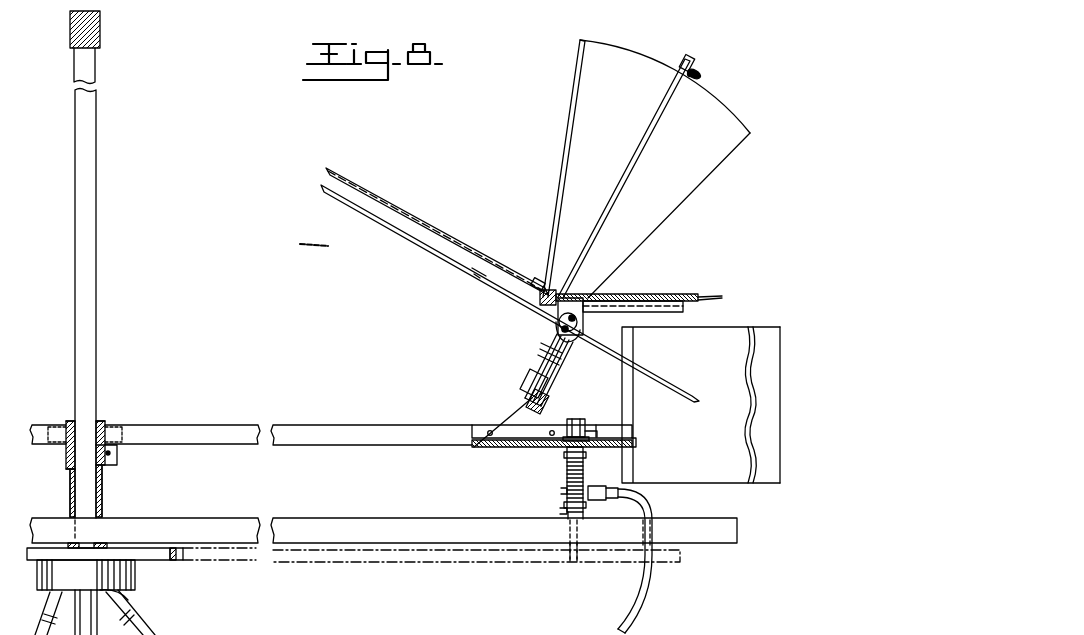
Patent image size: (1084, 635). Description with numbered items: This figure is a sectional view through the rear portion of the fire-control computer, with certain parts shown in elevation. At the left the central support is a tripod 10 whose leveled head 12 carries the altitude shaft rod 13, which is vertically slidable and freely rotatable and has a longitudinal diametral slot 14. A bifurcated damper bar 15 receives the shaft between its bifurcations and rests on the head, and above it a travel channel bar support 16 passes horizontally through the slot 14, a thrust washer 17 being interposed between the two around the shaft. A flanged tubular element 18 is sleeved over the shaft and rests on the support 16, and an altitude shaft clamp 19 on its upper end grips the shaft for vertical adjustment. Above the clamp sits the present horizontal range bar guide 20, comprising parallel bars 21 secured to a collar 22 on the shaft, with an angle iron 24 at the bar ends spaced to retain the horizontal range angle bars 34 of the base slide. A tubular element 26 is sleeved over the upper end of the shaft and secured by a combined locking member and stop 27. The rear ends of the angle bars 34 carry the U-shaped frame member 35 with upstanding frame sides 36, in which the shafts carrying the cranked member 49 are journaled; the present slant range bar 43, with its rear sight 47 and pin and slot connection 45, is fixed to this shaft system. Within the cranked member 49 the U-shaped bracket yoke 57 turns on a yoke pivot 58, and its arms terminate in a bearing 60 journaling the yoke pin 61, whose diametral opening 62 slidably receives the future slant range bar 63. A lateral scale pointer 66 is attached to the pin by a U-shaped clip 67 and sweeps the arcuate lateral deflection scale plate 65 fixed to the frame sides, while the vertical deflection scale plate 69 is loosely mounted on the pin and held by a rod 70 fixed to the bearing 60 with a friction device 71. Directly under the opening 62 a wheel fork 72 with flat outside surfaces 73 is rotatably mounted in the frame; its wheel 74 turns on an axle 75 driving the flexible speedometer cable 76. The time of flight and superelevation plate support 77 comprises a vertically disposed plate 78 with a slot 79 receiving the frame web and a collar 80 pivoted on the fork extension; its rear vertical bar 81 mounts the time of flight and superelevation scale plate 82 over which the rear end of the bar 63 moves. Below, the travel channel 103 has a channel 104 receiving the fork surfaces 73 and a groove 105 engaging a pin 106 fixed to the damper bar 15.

The tripod 10 is at (148, 630).
The head 12 is at (135, 578).
The altitude shaft rod 13 is at (98, 628).
The longitudinal diametral slot 14 is at (90, 283).
The bifurcated damper bar 15 is at (165, 561).
The travel channel bar support 16 is at (365, 526).
The thrust washer 17 is at (109, 543).
The tubular element 18 is at (104, 488).
The altitude shaft clamp 19 is at (110, 455).
The present horizontal range bar guide 20 is at (105, 424).
The parallel bars 21 is at (113, 428).
The collar 22 is at (76, 424).
The angle iron 24 is at (56, 446).
The tubular element 26 is at (97, 44).
The combined locking member and stop 27 is at (78, 45).
The horizontal range angle bars 34 is at (333, 426).
The frame member 35 is at (493, 450).
The frame sides 36 is at (506, 403).
The present slant range bar 43 is at (407, 224).
The pin and slot connection 45 is at (359, 205).
The rear sight 47 is at (540, 282).
The cranked member 49 is at (560, 362).
The U-shaped bracket yoke 57 is at (538, 345).
The yoke pivot 58 is at (521, 379).
The bearing 60 is at (549, 295).
The yoke pin 61 is at (580, 325).
The diametral opening 62 is at (577, 340).
The future slant range bar 63 is at (490, 281).
The arcuate lateral deflection scale plate 65 is at (719, 298).
The lateral scale pointer 66 is at (682, 294).
The U-shaped clip 67 is at (576, 298).
The vertical deflection scale plate 69 is at (728, 147).
The rod 70 is at (642, 150).
The friction device 71 is at (682, 66).
The wheel fork 72 is at (566, 457).
The flat outside surfaces 73 is at (592, 500).
The wheel 74 is at (579, 481).
The axle 75 is at (562, 494).
The flexible speedometer cable 76 is at (652, 590).
The time of flight and superelevation plate support 77 is at (596, 421).
The vertically disposed plate 78 is at (601, 429).
The slot 79 is at (634, 441).
The collar 80 is at (567, 424).
The vertical bar 81 is at (634, 471).
The time of flight and superelevation scale plate 82 is at (747, 405).
The travel channel 103 is at (562, 512).
The channel 104 is at (583, 519).
The groove 105 is at (568, 519).
The pin 106 is at (572, 550).